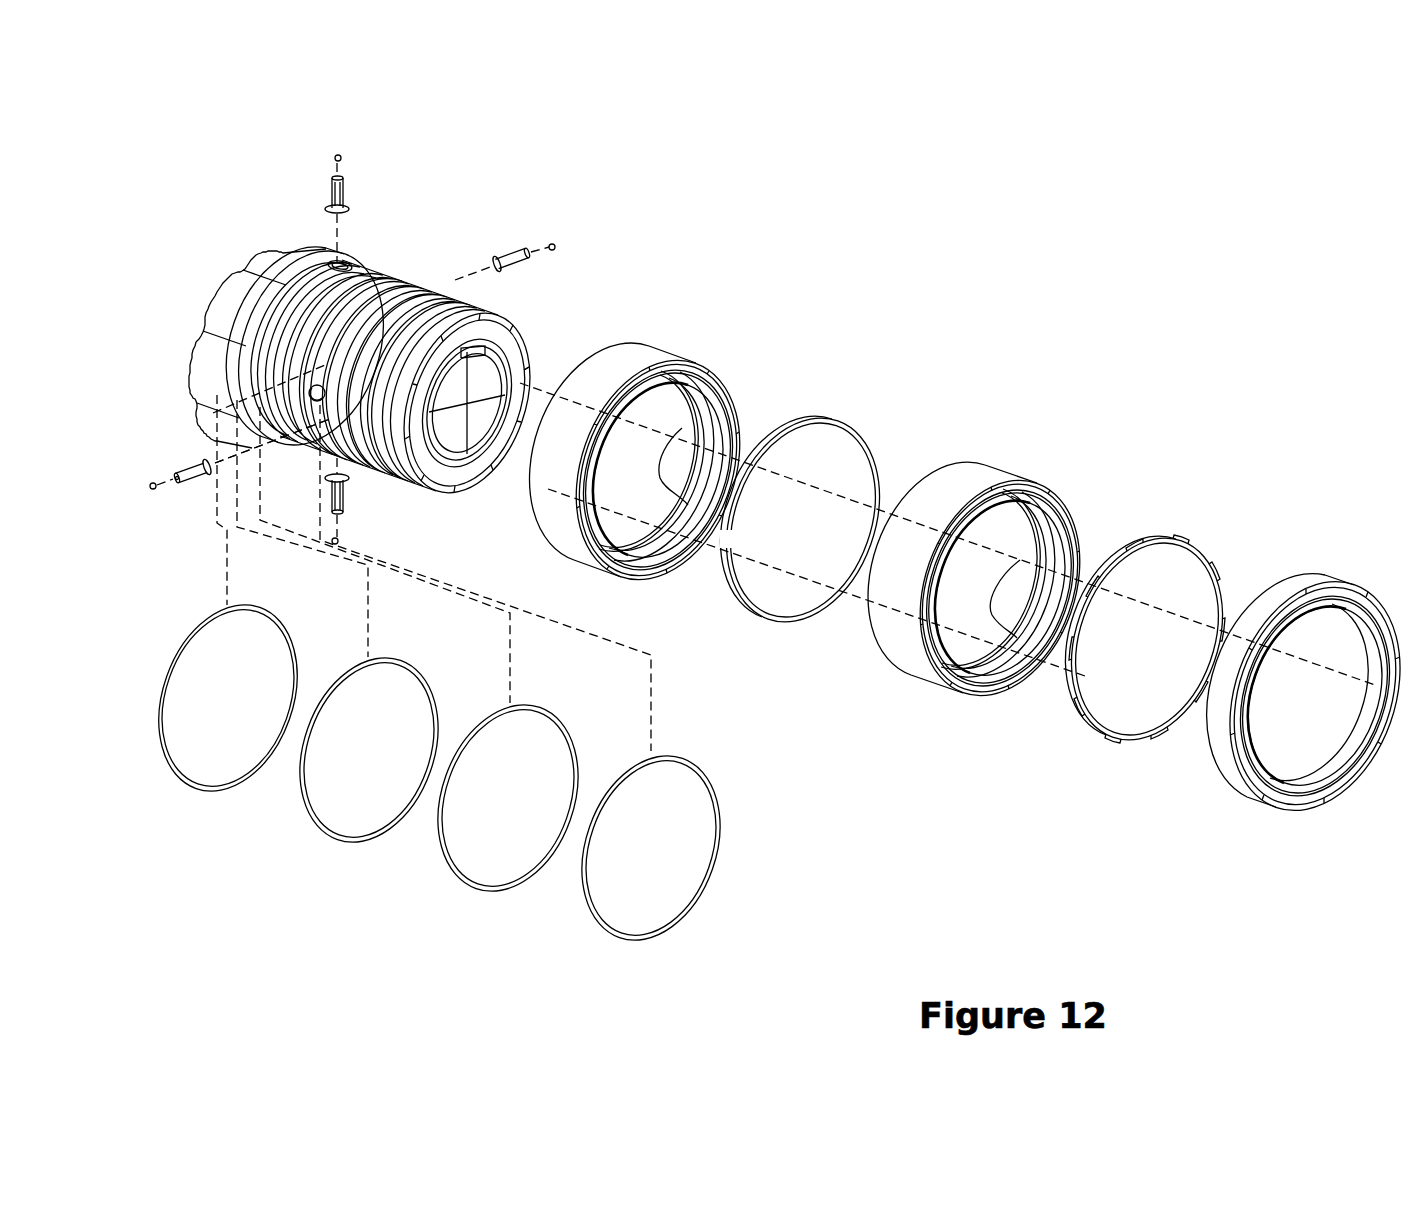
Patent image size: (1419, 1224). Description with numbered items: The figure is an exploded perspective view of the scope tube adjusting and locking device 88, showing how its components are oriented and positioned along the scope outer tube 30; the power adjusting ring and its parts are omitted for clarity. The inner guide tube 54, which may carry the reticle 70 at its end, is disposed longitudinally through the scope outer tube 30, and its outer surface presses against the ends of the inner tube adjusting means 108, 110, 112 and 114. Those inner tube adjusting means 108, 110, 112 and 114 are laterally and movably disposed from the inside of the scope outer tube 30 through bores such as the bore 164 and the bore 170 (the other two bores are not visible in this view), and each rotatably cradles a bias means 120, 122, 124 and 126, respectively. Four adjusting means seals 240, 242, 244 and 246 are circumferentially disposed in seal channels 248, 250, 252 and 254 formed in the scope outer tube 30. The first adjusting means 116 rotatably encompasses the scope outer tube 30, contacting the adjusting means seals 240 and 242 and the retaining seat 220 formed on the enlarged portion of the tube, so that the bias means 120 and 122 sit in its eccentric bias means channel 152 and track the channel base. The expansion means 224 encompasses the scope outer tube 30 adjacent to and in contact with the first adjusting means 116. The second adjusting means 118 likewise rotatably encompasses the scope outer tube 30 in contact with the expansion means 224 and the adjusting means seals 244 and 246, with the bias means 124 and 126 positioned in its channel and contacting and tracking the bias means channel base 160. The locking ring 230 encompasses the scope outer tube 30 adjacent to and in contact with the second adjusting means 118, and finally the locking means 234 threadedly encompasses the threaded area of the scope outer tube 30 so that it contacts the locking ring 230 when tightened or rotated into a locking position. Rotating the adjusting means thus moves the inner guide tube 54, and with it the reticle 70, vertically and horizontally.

The scope outer tube 30 is at (394, 331).
The inner guide tube 54 is at (527, 347).
The reticle 70 is at (477, 372).
The scope tube adjusting and locking device 88 is at (1186, 228).
The inner tube adjusting means 108 is at (330, 200).
The inner tube adjusting means 110 is at (347, 495).
The inner tube adjusting means 112 is at (518, 252).
The inner tube adjusting means 114 is at (200, 486).
The first adjusting means 116 is at (666, 426).
The second adjusting means 118 is at (999, 543).
The bias means 120 is at (333, 158).
The bias means 122 is at (340, 541).
The bias means 124 is at (553, 244).
The bias means 126 is at (153, 483).
The bias means channel 152 is at (684, 430).
The bias means channel base 160 is at (1022, 560).
The bore 164 is at (344, 264).
The bore 170 is at (245, 405).
The retaining seat 220 is at (235, 365).
The expansion means 224 is at (806, 417).
The locking ring 230 is at (1152, 537).
The locking means 234 is at (1314, 576).
The adjusting means seal 240 is at (206, 790).
The adjusting means seal 242 is at (335, 843).
The adjusting means seal 244 is at (480, 893).
The adjusting means seal 246 is at (616, 912).
The seal channel 248 is at (252, 246).
The seal channel 250 is at (372, 266).
The seal channel 252 is at (400, 278).
The seal channel 254 is at (443, 287).